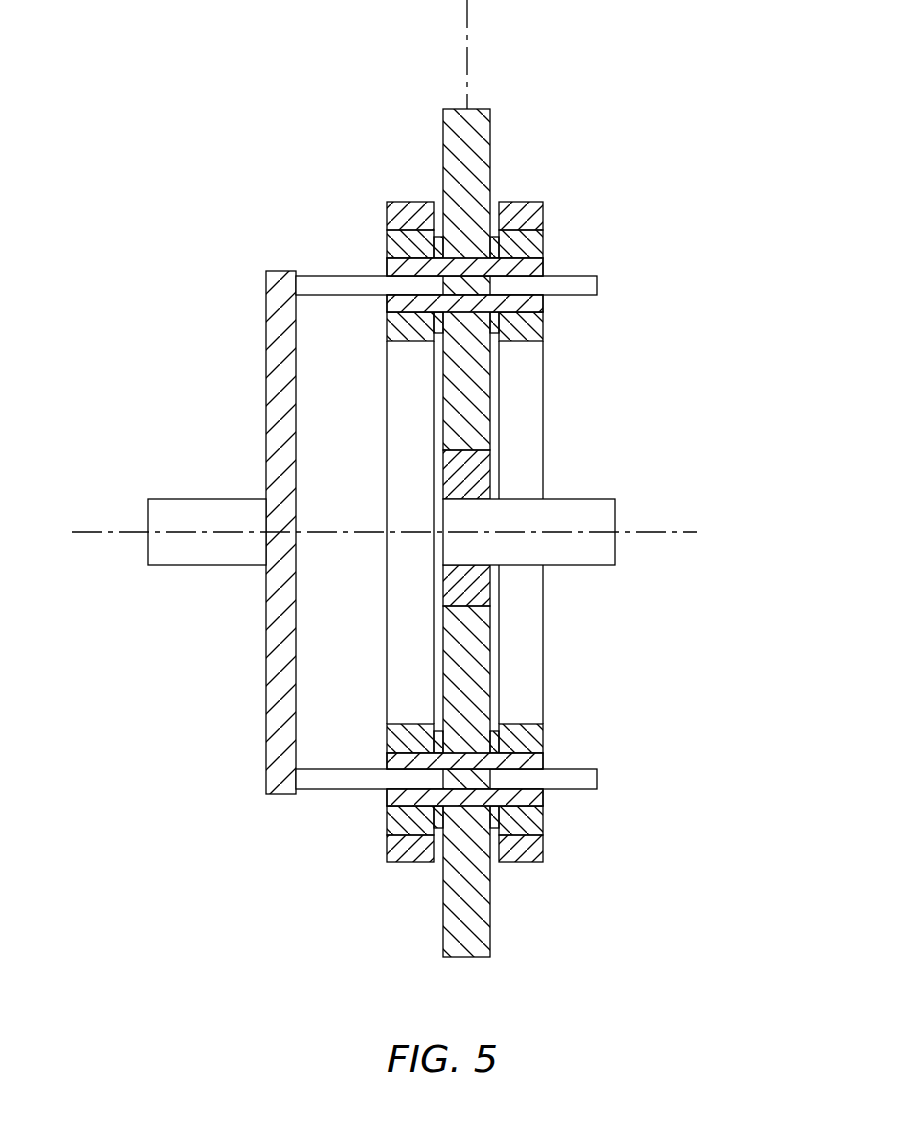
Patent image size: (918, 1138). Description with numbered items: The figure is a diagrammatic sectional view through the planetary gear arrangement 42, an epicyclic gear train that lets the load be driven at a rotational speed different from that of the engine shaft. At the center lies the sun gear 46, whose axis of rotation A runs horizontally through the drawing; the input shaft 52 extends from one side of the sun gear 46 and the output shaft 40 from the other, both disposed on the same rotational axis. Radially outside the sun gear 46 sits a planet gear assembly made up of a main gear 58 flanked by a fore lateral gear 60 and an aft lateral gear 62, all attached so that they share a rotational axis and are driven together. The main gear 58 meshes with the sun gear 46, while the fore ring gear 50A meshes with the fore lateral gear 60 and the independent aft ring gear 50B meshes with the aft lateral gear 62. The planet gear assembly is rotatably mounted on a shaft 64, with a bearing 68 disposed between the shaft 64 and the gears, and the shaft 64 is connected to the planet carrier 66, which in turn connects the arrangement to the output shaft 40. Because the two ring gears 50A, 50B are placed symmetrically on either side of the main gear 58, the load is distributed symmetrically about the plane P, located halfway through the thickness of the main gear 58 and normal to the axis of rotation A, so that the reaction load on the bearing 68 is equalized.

The output shaft 40 is at (177, 555).
The planetary gear arrangement 42 is at (683, 173).
The sun gear 46 is at (476, 593).
The fore ring gear 50A is at (392, 211).
The aft ring gear 50B is at (543, 210).
The input shaft 52 is at (616, 552).
The main gear 58 is at (480, 128).
The fore lateral gear 60 is at (388, 243).
The aft lateral gear 62 is at (545, 241).
The shaft 64 is at (598, 287).
The planet carrier 66 is at (283, 288).
The bearing 68 is at (545, 267).
The plane P is at (467, 30).
The axis of rotation A is at (97, 530).